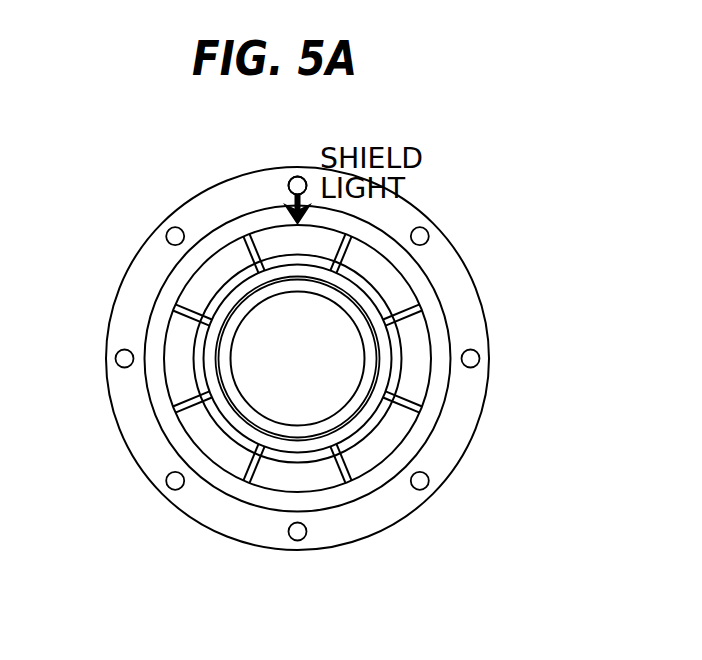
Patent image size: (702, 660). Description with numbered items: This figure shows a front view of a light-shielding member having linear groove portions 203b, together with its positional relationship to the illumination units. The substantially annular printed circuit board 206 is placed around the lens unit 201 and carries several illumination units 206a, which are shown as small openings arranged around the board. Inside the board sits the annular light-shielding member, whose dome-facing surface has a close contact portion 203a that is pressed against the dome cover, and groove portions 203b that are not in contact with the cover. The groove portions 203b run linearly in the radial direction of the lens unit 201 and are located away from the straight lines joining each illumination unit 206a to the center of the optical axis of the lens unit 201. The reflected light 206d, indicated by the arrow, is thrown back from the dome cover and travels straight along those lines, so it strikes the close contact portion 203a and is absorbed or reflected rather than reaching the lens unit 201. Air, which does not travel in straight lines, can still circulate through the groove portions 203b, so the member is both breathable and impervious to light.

The lens unit 201 is at (325, 385).
The close contact portion 203a is at (393, 290).
The groove portions 203b is at (410, 407).
The printed circuit board 206 is at (137, 303).
The illumination unit 206a is at (175, 234).
The reflected light 206d is at (289, 189).